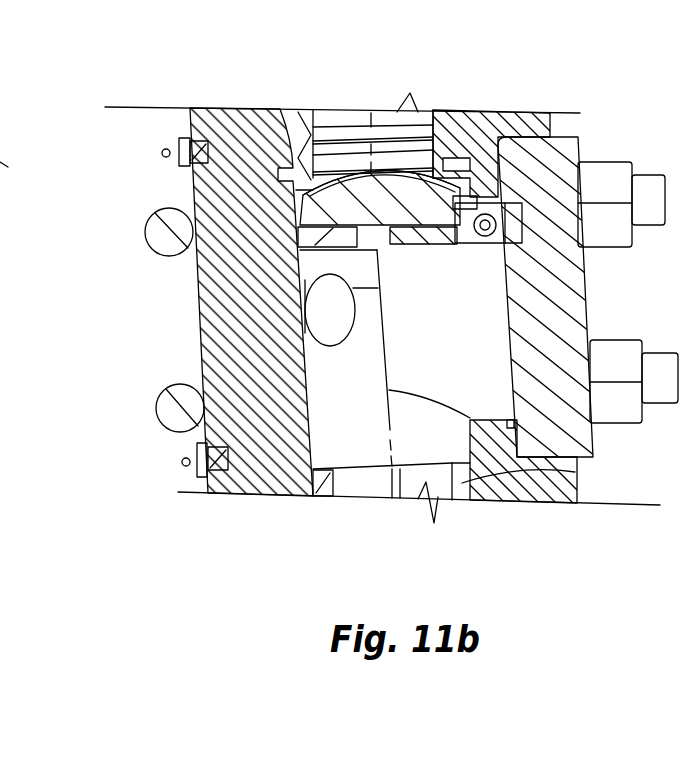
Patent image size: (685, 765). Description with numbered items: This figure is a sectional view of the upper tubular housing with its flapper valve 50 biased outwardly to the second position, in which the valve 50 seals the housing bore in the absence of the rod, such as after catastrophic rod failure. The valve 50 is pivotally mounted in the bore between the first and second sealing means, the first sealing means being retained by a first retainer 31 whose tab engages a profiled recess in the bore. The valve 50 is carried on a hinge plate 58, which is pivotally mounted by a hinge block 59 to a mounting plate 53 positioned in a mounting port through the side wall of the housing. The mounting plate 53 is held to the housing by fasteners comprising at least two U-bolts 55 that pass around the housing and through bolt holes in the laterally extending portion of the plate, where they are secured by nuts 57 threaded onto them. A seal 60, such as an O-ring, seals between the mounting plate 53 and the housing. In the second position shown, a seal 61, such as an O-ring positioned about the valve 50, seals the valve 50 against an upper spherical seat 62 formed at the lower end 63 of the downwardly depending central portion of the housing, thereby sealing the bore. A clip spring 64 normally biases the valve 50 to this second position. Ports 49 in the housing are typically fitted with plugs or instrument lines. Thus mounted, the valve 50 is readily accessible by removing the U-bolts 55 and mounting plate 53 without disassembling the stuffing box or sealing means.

The first retainer 31 is at (577, 473).
The ports 49 is at (328, 312).
The valve 50 is at (385, 205).
The mounting plate 53 is at (577, 143).
The U-bolts 55 is at (143, 228).
The nuts 57 is at (632, 243).
The hinge plate 58 is at (305, 265).
The hinge block 59 is at (540, 113).
The seal 60 is at (577, 458).
The seal 61 is at (448, 178).
The upper spherical seat 62 is at (333, 175).
The lower end 63 is at (268, 116).
The clip spring 64 is at (505, 250).